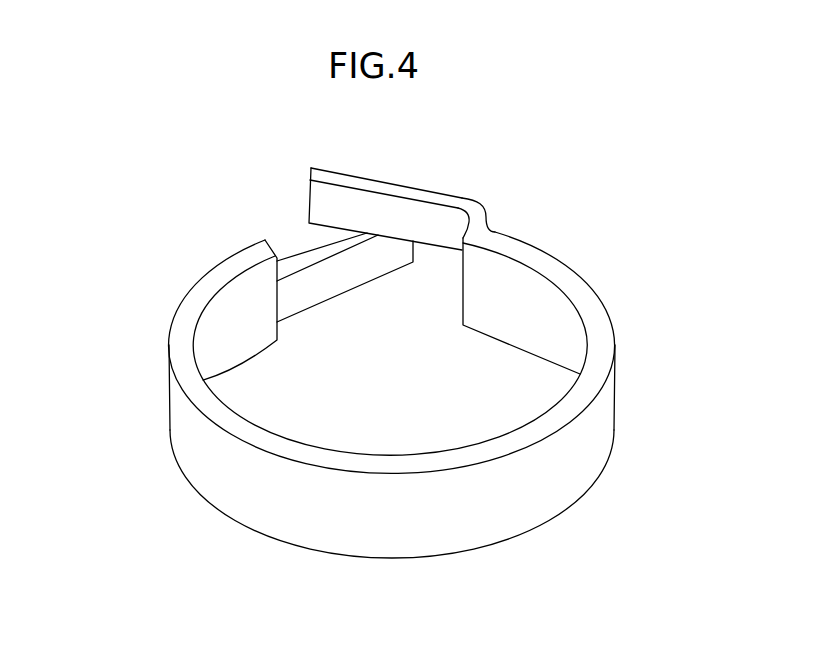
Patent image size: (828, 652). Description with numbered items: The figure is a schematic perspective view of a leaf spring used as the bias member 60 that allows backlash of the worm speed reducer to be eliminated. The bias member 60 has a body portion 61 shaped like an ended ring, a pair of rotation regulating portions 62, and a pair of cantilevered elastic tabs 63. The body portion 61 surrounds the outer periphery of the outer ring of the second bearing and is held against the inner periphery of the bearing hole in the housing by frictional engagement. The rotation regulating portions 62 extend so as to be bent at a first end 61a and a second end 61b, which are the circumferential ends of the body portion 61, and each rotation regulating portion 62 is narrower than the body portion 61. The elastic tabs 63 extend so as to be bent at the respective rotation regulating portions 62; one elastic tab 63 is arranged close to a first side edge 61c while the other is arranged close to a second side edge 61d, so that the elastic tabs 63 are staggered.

The bias member 60 is at (496, 180).
The body portion 61 is at (368, 525).
The first end 61a is at (554, 320).
The second end 61b is at (225, 323).
The first side edge 61c is at (178, 343).
The second side edge 61d is at (520, 346).
The rotation regulating portion 62 is at (476, 218).
The elastic tab 63 is at (428, 193).